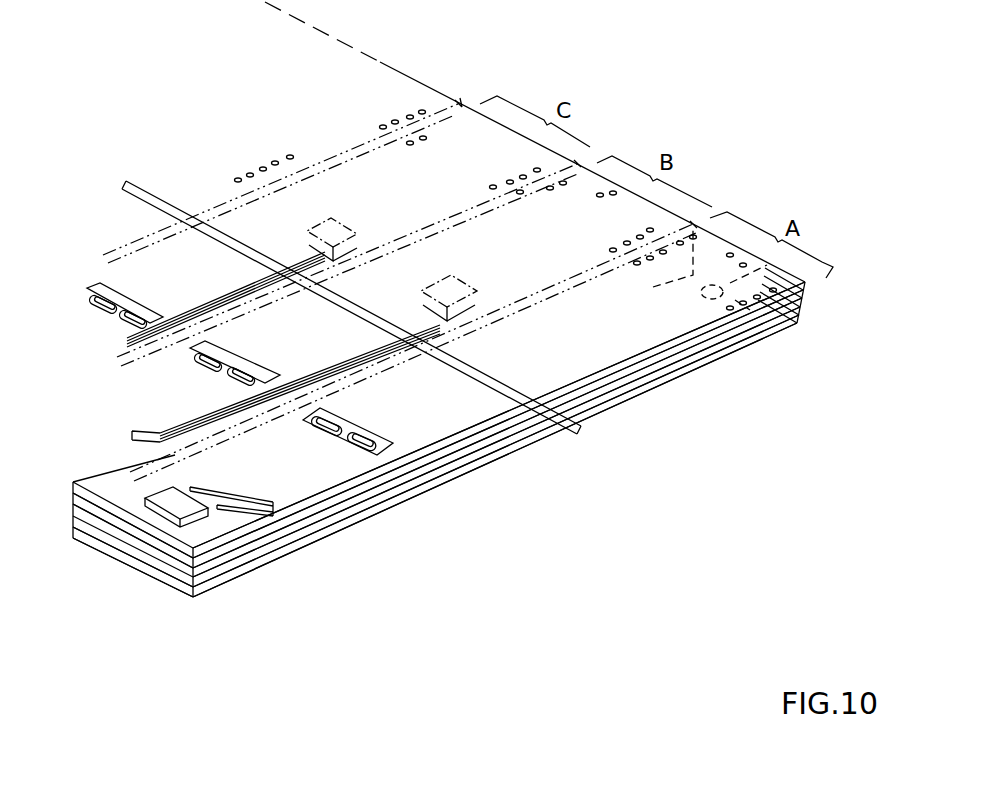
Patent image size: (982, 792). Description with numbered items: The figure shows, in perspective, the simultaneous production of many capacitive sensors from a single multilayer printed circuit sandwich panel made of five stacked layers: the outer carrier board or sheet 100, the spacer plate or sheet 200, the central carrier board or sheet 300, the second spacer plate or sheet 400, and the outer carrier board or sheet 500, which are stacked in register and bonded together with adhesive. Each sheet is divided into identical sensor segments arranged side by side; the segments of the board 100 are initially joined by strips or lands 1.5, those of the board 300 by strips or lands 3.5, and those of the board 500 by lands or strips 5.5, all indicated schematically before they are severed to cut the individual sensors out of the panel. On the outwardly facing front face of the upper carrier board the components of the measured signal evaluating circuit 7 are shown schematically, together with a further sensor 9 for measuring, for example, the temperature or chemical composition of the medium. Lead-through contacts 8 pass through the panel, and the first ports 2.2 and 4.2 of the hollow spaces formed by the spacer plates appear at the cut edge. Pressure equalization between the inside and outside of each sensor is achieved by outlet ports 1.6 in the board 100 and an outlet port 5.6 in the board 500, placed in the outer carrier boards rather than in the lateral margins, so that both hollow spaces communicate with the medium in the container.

The strips or lands 1.5 is at (461, 104).
The outlet ports 1.6 is at (364, 425).
The first ports 2.2 is at (132, 530).
The strips or lands 3.5 is at (78, 534).
The first ports 4.2 is at (143, 558).
The lands or strips 5.5 is at (75, 515).
The outlet port 5.6 is at (700, 293).
The measured signal evaluating circuit 7 is at (314, 231).
The lead-through contacts 8 is at (424, 138).
The further sensor 9 is at (177, 490).
The carrier board or sheet 100 is at (734, 362).
The spacer plate or sheet 200 is at (698, 388).
The carrier board or sheet 300 is at (661, 391).
The spacer plate or sheet 400 is at (624, 408).
The carrier board or sheet 500 is at (592, 416).